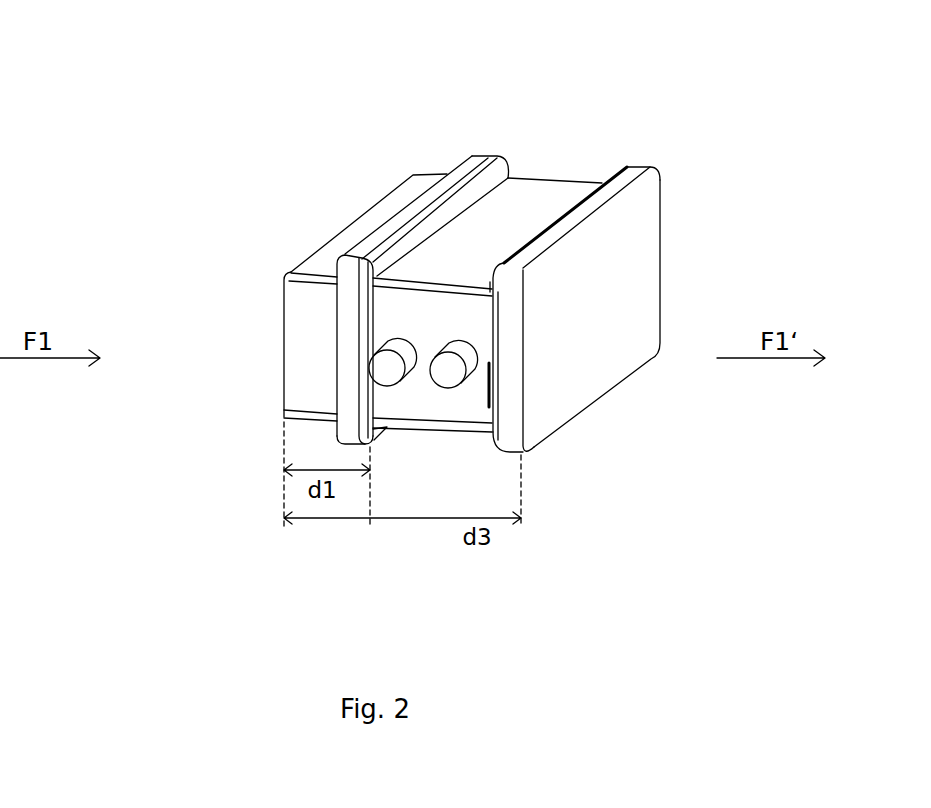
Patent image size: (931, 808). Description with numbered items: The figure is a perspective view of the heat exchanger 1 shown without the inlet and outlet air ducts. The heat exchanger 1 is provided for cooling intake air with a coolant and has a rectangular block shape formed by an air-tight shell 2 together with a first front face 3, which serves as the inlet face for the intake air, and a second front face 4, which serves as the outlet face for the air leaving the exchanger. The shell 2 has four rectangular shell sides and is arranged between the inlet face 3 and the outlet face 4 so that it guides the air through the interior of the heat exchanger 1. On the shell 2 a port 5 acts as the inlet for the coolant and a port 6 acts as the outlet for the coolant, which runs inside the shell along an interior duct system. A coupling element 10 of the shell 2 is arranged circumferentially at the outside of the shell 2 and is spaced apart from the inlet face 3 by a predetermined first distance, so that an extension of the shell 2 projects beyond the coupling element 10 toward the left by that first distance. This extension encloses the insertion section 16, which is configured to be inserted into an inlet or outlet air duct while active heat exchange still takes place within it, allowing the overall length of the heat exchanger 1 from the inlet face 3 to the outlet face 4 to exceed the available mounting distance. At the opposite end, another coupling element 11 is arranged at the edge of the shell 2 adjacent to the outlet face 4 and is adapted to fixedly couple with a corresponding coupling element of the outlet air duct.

The heat exchanger 1 is at (116, 84).
The shell 2 is at (555, 179).
The first front face 3 is at (284, 301).
The second front face 4 is at (583, 330).
The port 5 is at (403, 383).
The port 6 is at (468, 383).
The coupling element 10 is at (497, 157).
The further coupling element 11 is at (652, 168).
The insertion section 16 is at (385, 212).